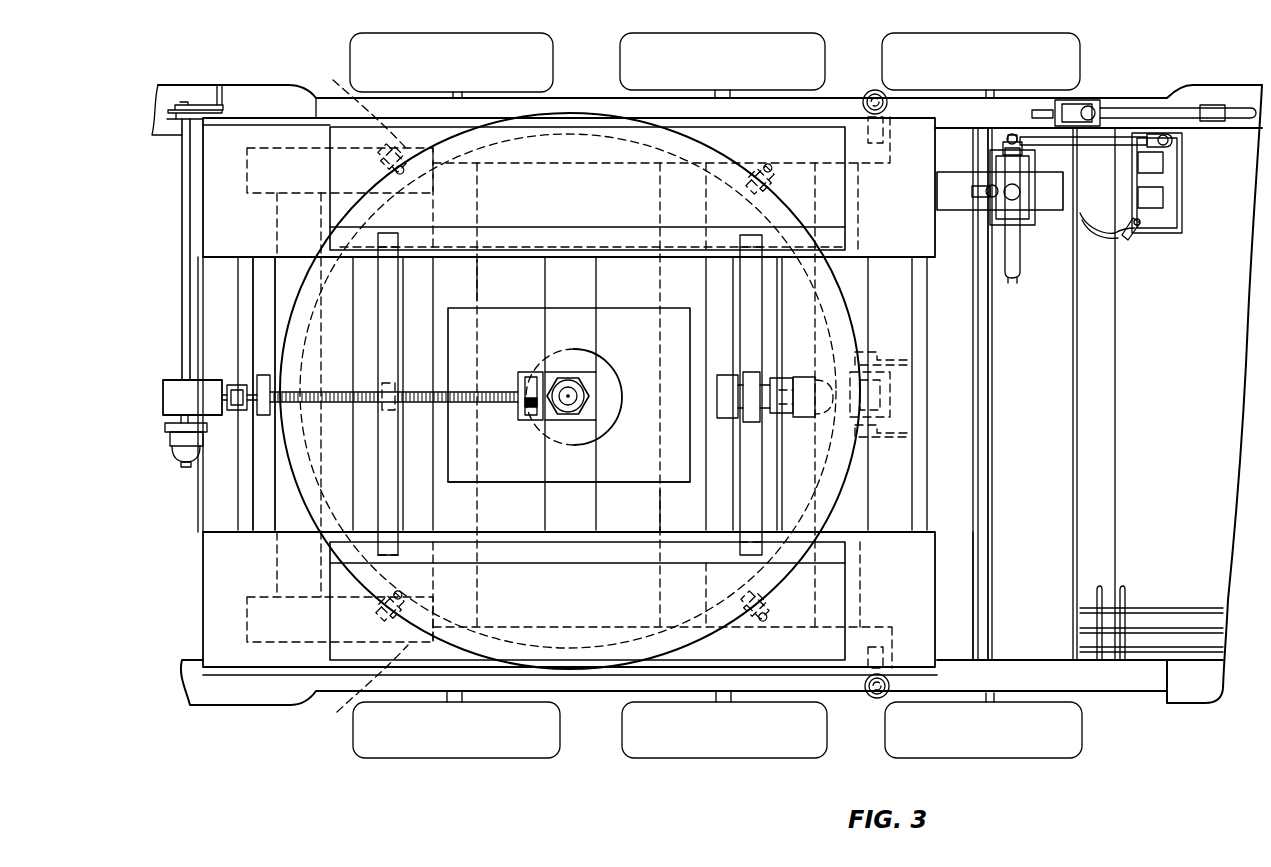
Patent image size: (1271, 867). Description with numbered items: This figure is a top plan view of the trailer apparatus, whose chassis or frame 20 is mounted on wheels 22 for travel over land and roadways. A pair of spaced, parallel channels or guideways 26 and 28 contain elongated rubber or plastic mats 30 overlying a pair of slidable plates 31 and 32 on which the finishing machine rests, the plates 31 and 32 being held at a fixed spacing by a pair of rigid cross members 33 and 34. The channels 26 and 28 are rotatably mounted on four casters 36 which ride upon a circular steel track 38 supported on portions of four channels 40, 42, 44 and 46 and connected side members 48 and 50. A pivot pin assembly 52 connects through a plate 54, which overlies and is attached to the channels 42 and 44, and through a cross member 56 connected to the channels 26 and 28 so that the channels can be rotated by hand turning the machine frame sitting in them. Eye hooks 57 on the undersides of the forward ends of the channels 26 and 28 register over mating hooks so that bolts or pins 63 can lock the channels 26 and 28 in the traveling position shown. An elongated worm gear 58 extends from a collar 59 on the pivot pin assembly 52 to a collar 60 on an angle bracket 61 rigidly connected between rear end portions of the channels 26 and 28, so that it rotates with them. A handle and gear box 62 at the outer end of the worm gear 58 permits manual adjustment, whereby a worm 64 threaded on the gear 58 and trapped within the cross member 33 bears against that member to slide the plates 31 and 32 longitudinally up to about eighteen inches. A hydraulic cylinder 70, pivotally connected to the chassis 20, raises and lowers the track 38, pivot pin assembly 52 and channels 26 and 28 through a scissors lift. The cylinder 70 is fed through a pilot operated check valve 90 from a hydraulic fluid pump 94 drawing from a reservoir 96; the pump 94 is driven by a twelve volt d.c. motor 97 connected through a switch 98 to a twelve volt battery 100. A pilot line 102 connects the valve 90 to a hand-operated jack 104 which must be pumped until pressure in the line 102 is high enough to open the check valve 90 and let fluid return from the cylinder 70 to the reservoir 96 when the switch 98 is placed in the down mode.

The frame 20 is at (1128, 693).
The wheels 22 is at (600, 30).
The channel 26 is at (940, 582).
The channel 28 is at (1060, 207).
The mats 30 is at (848, 196).
The slidable plate 31 is at (838, 552).
The slidable plate 32 is at (835, 238).
The cross member 33 is at (398, 295).
The cross member 34 is at (740, 278).
The casters 36 is at (365, 200).
The circular steel track 38 is at (605, 155).
The channel 40 is at (277, 283).
The channel 42 is at (480, 277).
The channel 44 is at (668, 507).
The channel 46 is at (815, 380).
The side member 48 is at (356, 398).
The side member 50 is at (247, 170).
The pivot pin assembly 52 is at (580, 388).
The plate 54 is at (512, 484).
The cross member 56 is at (545, 322).
The eye hooks 57 is at (866, 93).
The worm gear 58 is at (465, 402).
The collar 59 is at (527, 385).
The collar 60 is at (262, 415).
The angle bracket 61 is at (260, 330).
The handle and gear box 62 is at (163, 392).
The bolts or pins 63 is at (883, 130).
The worm 64 is at (385, 408).
The hydraulic cylinder 70 is at (796, 418).
The pilot operated check valve 90 is at (890, 410).
The hydraulic fluid pump 94 is at (1038, 168).
The reservoir 96 is at (955, 200).
The motor 97 is at (1045, 215).
The switch 98 is at (1003, 145).
The battery 100 is at (1163, 182).
The pilot line 102 is at (1042, 110).
The hand-operated jack 104 is at (1172, 102).